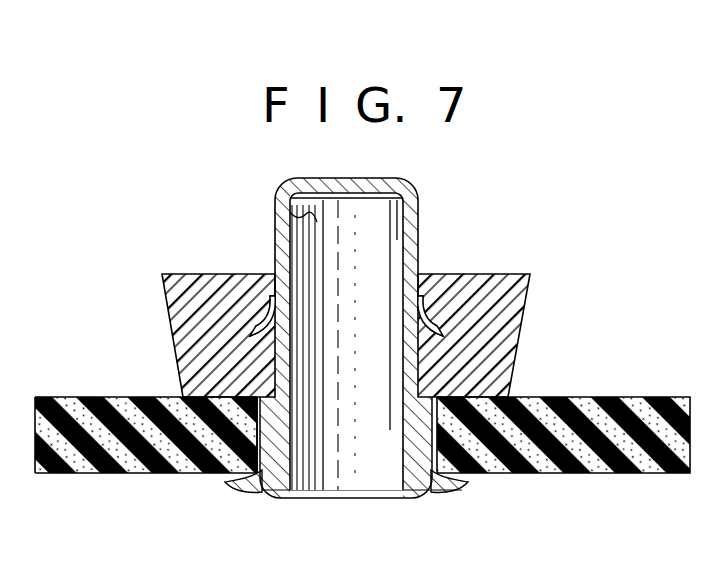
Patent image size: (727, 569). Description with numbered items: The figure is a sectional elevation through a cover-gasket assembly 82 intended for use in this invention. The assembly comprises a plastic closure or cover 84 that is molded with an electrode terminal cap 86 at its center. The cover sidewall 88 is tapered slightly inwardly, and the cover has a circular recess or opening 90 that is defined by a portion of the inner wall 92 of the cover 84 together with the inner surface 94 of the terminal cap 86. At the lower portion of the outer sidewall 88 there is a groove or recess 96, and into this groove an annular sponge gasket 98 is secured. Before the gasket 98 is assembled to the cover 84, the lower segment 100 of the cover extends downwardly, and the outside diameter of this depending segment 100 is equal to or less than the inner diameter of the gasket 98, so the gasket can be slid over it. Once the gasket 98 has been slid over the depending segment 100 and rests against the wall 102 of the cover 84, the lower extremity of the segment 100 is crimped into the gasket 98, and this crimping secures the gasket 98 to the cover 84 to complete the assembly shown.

The cover-gasket assembly 82 is at (226, 252).
The cover 84 is at (172, 304).
The electrode terminal cap 86 is at (352, 357).
The cover sidewall 88 is at (526, 336).
The circular recess 90 is at (301, 499).
The inner wall 92 is at (289, 397).
The inner surface 94 is at (302, 208).
The groove 96 is at (244, 490).
The sponge gasket 98 is at (124, 466).
The lower segment 100 is at (444, 483).
The wall 102 is at (183, 393).